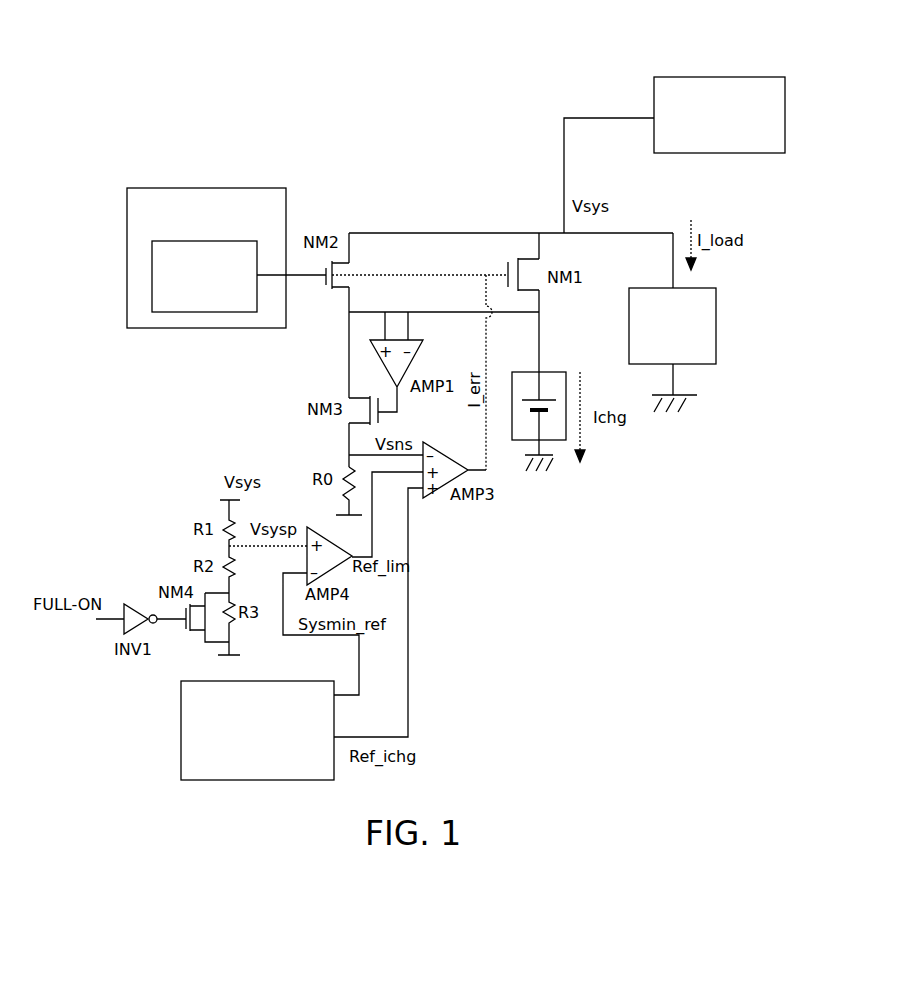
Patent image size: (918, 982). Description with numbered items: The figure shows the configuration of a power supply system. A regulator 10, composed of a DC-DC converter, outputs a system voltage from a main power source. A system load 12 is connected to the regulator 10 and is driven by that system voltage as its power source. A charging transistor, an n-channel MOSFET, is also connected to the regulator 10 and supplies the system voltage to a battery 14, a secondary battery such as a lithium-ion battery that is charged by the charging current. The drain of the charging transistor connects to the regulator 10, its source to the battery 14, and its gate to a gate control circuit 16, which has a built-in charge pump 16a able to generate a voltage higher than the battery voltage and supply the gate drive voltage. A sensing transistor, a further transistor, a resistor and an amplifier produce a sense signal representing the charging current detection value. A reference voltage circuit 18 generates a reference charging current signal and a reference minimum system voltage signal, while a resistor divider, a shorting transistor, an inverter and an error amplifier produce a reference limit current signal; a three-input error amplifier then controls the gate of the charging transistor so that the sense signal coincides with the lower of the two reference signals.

The regulator 10 is at (720, 77).
The system load 12 is at (716, 319).
The battery 14 is at (556, 372).
The gate control circuit 16 is at (199, 188).
The charge pump 16a is at (193, 312).
The reference voltage circuit 18 is at (181, 727).